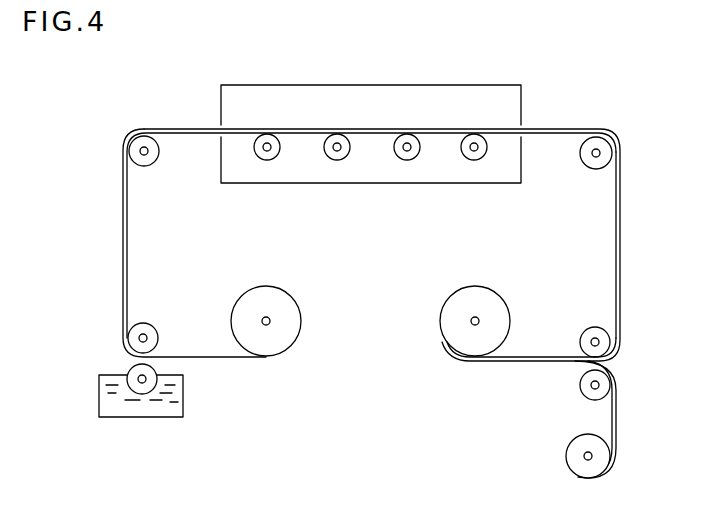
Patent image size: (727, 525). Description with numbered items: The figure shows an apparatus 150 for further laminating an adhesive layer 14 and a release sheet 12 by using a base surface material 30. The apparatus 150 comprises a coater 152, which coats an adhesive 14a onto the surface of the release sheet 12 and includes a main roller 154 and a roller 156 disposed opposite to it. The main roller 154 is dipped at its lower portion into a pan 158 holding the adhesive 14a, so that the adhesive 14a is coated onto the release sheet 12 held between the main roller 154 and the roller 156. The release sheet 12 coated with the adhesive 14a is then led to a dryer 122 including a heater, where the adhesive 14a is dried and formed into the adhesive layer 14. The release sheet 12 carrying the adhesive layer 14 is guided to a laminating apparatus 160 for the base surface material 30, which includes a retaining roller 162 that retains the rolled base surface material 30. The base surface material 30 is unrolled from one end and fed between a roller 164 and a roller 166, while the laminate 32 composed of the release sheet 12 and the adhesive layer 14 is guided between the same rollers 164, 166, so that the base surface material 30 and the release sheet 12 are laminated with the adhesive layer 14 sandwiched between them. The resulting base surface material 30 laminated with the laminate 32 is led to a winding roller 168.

The apparatus 150 is at (603, 58).
The dryer 122 is at (267, 87).
The adhesive layer 14 is at (620, 243).
The adhesive 14a is at (123, 247).
The release sheet 12 is at (127, 222).
The laminate 32 is at (618, 310).
The roller 156 is at (148, 331).
The pan 158 is at (99, 400).
The main roller 154 is at (183, 376).
The coater 152 is at (113, 369).
The winding roller 168 is at (476, 326).
The roller 166 is at (590, 327).
The base surface material 30 is at (530, 365).
The laminating apparatus 160 is at (618, 367).
The roller 164 is at (582, 394).
The retaining roller 162 is at (588, 460).